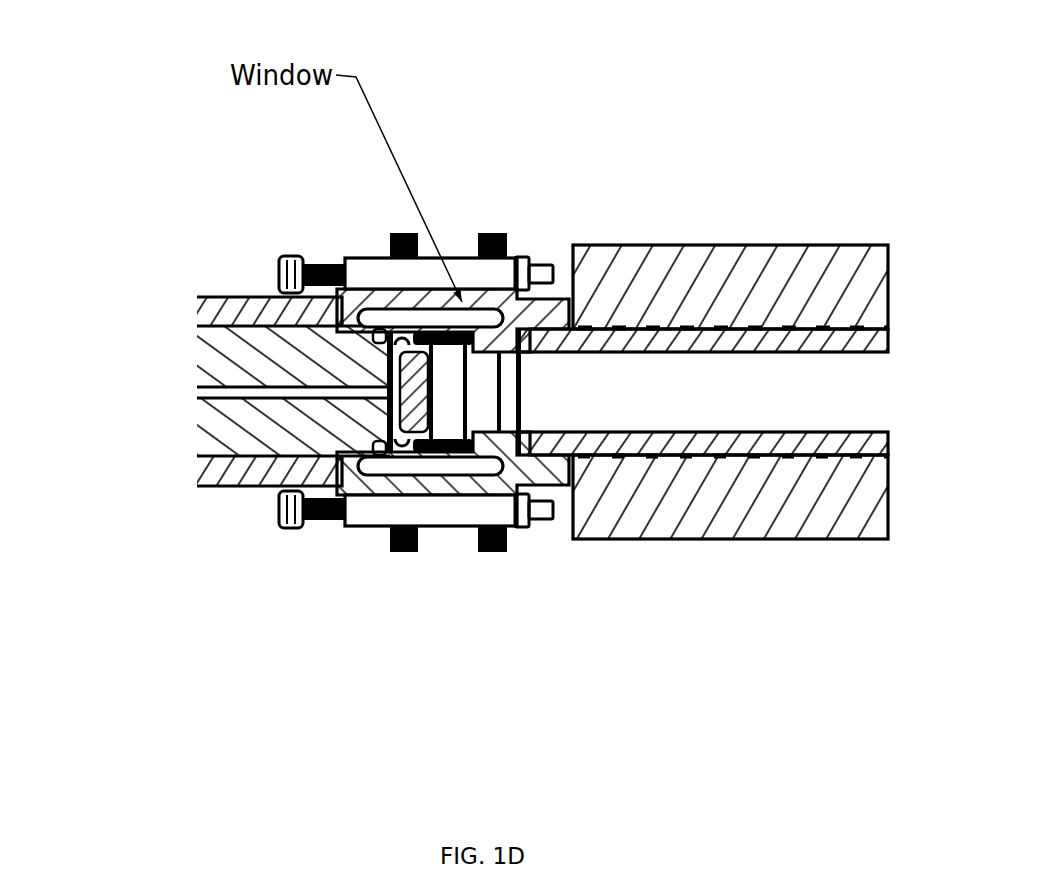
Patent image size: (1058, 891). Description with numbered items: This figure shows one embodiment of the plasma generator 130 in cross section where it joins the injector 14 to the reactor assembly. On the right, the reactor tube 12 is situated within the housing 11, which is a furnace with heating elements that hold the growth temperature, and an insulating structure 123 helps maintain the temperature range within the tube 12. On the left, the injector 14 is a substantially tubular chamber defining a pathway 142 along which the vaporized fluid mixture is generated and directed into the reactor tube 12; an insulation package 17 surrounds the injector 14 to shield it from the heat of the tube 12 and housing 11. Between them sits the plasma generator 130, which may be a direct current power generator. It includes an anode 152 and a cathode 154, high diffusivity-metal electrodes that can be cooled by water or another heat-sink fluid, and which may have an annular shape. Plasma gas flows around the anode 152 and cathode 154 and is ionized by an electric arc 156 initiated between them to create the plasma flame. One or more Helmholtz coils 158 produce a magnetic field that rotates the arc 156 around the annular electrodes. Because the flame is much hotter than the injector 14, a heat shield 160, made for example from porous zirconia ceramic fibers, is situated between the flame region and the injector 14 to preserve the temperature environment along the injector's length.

The housing 11 is at (712, 197).
The tube 12 is at (683, 323).
The injector 14 is at (160, 308).
The insulation package 17 is at (207, 466).
The insulating structure 123 is at (702, 558).
The plasma generator 130 is at (303, 230).
The pathway 142 is at (210, 423).
The anode 152 is at (452, 559).
The cathode 154 is at (386, 528).
The electric arc 156 is at (500, 524).
The Helmholtz coils 158 is at (407, 230).
The heat shield 160 is at (485, 551).